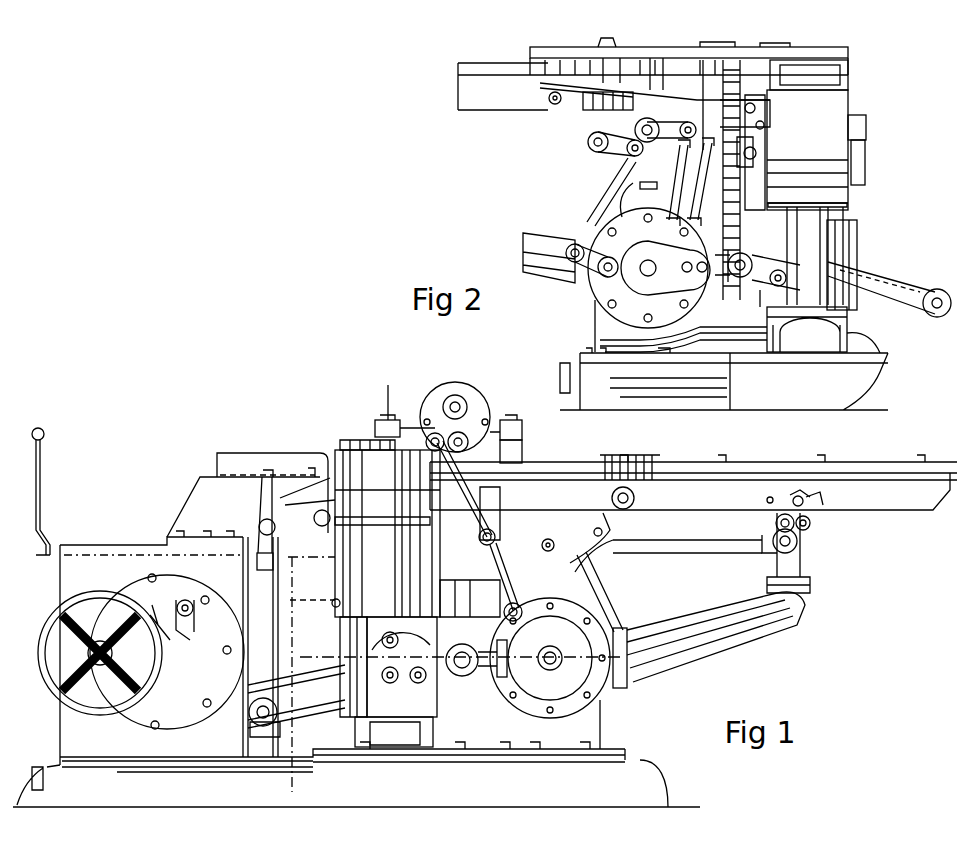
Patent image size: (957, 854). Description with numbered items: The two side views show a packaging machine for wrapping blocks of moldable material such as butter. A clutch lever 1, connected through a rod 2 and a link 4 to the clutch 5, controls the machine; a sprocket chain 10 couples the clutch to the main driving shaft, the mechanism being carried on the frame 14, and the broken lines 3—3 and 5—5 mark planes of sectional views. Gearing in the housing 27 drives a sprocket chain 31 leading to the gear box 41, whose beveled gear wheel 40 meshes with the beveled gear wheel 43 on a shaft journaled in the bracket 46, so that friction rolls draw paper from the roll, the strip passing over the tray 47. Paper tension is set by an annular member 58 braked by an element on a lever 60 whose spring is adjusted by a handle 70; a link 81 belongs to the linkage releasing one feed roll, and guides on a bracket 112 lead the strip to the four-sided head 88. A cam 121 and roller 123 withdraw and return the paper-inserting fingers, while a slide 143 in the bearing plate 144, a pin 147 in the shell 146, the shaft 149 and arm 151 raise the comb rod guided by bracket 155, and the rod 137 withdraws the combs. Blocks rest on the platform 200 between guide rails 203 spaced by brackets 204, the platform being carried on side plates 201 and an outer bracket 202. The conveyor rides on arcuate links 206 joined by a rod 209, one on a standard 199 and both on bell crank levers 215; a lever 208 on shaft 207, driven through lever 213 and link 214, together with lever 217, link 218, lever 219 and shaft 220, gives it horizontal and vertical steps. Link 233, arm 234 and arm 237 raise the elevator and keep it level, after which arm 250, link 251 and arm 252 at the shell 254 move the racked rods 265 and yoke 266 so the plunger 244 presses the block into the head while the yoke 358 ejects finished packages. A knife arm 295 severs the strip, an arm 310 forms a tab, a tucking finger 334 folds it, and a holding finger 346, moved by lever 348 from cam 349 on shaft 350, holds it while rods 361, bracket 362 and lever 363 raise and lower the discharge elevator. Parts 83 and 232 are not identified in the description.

In FIG. 1, the clutch lever 1 is at (35, 495).
In FIG. 1, the rod 2 is at (63, 578).
In FIG. 1, the section line 3— 3 is at (325, 432).
In FIG. 1, the link 4 is at (267, 682).
In FIG. 1, the clutch 5 is at (250, 728).
In FIG. 2, the sprocket chain 10 is at (884, 290).
In FIG. 1, the sprocket chain 10 is at (312, 712).
In FIG. 2, the frame 14 is at (610, 328).
In FIG. 1, the frame 14 is at (602, 718).
In FIG. 2, the housing 27 is at (672, 280).
In FIG. 2, the sprocket chain 31 is at (727, 220).
In FIG. 2, the beveled gear wheel 40 is at (757, 154).
In FIG. 2, the gear box 41 is at (830, 110).
In FIG. 2, the beveled gear wheel 43 is at (765, 127).
In FIG. 2, the bracket 46 is at (541, 94).
In FIG. 2, the tray 47 is at (532, 54).
In FIG. 1, the tray 47 is at (603, 462).
In FIG. 2, the annular member 58 is at (594, 112).
In FIG. 2, the lever 60 is at (598, 103).
In FIG. 1, the handle 70 is at (640, 485).
In FIG. 2, the link 81 is at (757, 110).
In FIG. 1, the bracket 83 is at (437, 612).
In FIG. 1, the head 88 is at (388, 440).
In FIG. 2, the bracket 112 is at (850, 70).
In FIG. 2, the cam 121 is at (865, 168).
In FIG. 2, the roller 123 is at (866, 130).
In FIG. 2, the rod 137 is at (785, 228).
In FIG. 1, the slide 143 is at (470, 699).
In FIG. 1, the bearing plate 144 is at (505, 690).
In FIG. 2, the shell 146 is at (850, 245).
In FIG. 1, the shell 146 is at (350, 695).
In FIG. 1, the pin 147 is at (394, 732).
In FIG. 1, the shaft 149 is at (450, 724).
In FIG. 2, the arm 151 is at (762, 298).
In FIG. 1, the bracket 155 is at (462, 645).
In FIG. 1, the standard 199 is at (800, 562).
In FIG. 2, the platform 200 is at (462, 92).
In FIG. 1, the platform 200 is at (775, 482).
In FIG. 2, the side plates 201 is at (603, 176).
In FIG. 2, the bracket 202 is at (548, 282).
In FIG. 1, the bracket 202 is at (800, 606).
In FIG. 1, the guide rails 203 is at (745, 473).
In FIG. 1, the brackets 204 is at (720, 456).
In FIG. 1, the arcuate links 206 is at (815, 510).
In FIG. 2, the shaft 207 is at (648, 128).
In FIG. 1, the shaft 207 is at (563, 536).
In FIG. 2, the lever 208 is at (672, 126).
In FIG. 1, the rod 209 is at (688, 553).
In FIG. 2, the lever 213 is at (665, 218).
In FIG. 2, the link 214 is at (690, 166).
In FIG. 1, the bell crank levers 215 is at (773, 530).
In FIG. 2, the lever 217 is at (578, 246).
In FIG. 2, the link 218 is at (602, 200).
In FIG. 1, the link 218 is at (596, 589).
In FIG. 2, the lever 219 is at (627, 152).
In FIG. 1, the shaft 220 is at (603, 532).
In FIG. 1, the gear housing 232 is at (398, 636).
In FIG. 2, the link 233 is at (669, 183).
In FIG. 1, the arm 234 is at (493, 527).
In FIG. 1, the arm 237 is at (492, 582).
In FIG. 1, the plunger 244 is at (505, 445).
In FIG. 1, the arm 250 is at (530, 612).
In FIG. 1, the link 251 is at (500, 540).
In FIG. 1, the arm 252 is at (437, 440).
In FIG. 1, the shell 254 is at (447, 432).
In FIG. 1, the rods 265 is at (468, 402).
In FIG. 1, the yoke 266 is at (509, 420).
In FIG. 1, the arm 295 is at (293, 540).
In FIG. 1, the arm 310 is at (310, 502).
In FIG. 1, the tucking finger 334 is at (305, 487).
In FIG. 1, the holding finger 346 is at (332, 450).
In FIG. 1, the lever 348 is at (260, 510).
In FIG. 1, the cam 349 is at (188, 650).
In FIG. 1, the shaft 350 is at (160, 680).
In FIG. 1, the yoke 358 is at (390, 392).
In FIG. 1, the rods 361 is at (335, 580).
In FIG. 1, the bracket 362 is at (332, 603).
In FIG. 1, the lever 363 is at (245, 625).